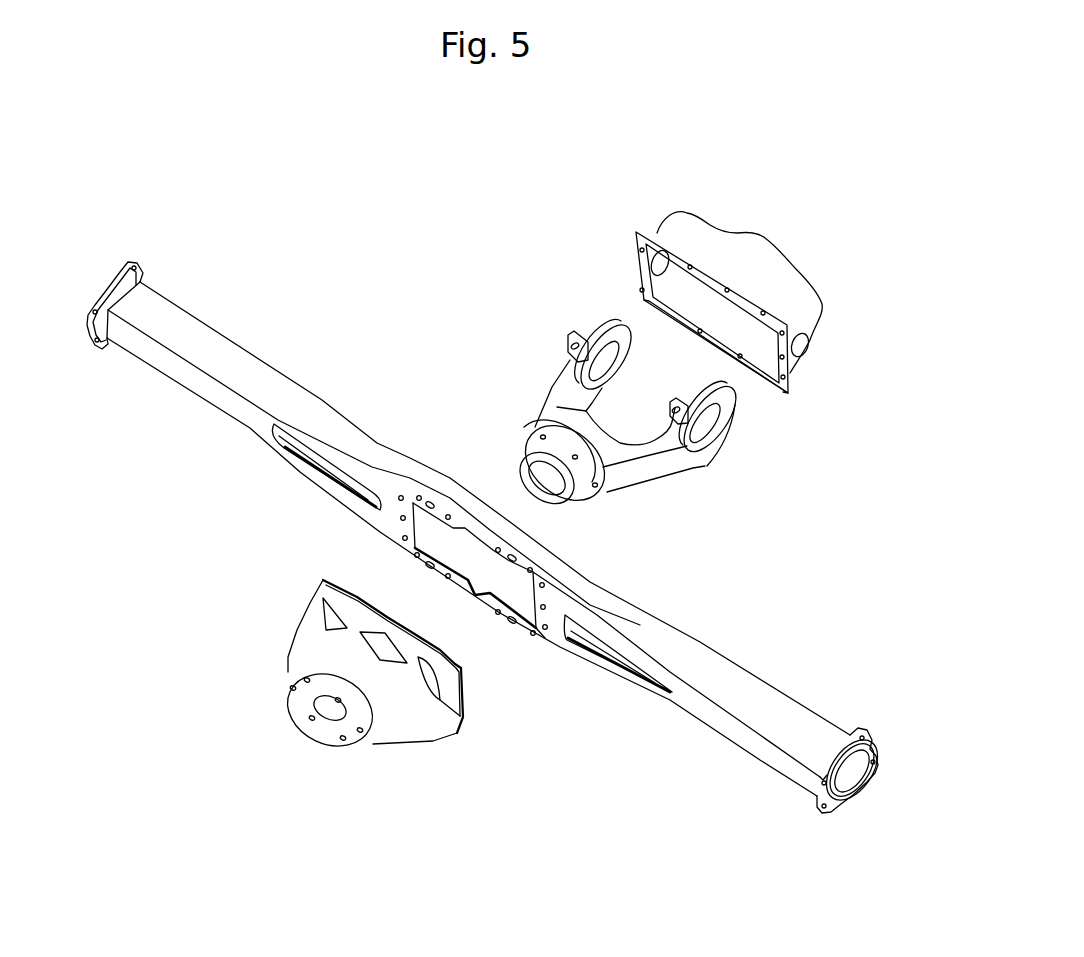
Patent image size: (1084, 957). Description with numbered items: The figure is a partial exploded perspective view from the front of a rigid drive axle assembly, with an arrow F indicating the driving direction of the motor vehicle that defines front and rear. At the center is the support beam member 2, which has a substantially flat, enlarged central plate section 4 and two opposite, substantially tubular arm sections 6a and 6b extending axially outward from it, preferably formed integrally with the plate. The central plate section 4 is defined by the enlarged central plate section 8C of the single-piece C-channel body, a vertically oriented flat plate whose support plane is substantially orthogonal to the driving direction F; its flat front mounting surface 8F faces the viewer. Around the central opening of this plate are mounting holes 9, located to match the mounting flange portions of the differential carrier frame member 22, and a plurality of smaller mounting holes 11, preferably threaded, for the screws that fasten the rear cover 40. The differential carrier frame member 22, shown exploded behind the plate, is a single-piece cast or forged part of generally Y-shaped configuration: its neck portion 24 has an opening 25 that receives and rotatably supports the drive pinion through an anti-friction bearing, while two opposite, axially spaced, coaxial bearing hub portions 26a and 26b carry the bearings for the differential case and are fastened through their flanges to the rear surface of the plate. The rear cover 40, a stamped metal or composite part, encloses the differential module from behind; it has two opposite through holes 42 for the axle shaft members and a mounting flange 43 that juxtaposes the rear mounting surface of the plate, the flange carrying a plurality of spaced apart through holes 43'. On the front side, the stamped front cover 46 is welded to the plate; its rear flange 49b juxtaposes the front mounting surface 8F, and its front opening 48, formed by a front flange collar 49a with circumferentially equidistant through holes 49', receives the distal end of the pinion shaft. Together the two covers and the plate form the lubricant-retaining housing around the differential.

The support beam member 2 is at (607, 697).
The central plate section 4 is at (442, 588).
The arm section 6a is at (214, 313).
The arm section 6b is at (818, 690).
The central plate section of the body 8C is at (500, 606).
The front mounting surface 8F is at (556, 630).
The mounting holes 9 is at (433, 502).
The mounting holes 11 is at (419, 495).
The differential carrier frame member 22 is at (654, 410).
The neck portion 24 is at (587, 507).
The opening 25 is at (548, 484).
The bearing hub portion 26a is at (585, 317).
The bearing hub portion 26b is at (750, 433).
The rear cover 40 is at (730, 315).
The through holes 42 is at (656, 262).
The mounting flange 43 is at (752, 325).
The through holes 43' is at (762, 346).
The front cover 46 is at (347, 666).
The front opening 48 is at (330, 727).
The front flange collar 49a is at (304, 705).
The through holes 49' is at (297, 706).
The rear flange 49b is at (323, 580).
The driving direction arrow F is at (262, 779).